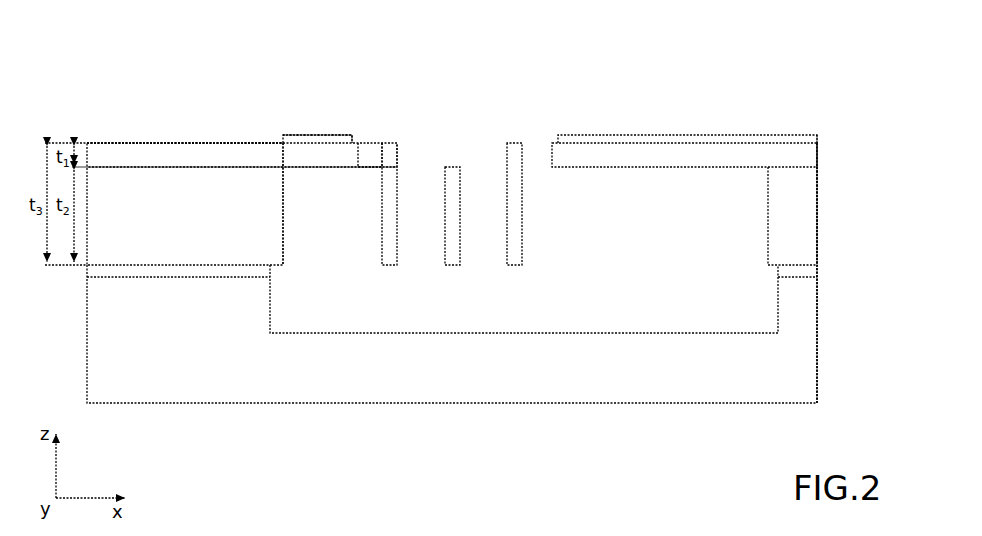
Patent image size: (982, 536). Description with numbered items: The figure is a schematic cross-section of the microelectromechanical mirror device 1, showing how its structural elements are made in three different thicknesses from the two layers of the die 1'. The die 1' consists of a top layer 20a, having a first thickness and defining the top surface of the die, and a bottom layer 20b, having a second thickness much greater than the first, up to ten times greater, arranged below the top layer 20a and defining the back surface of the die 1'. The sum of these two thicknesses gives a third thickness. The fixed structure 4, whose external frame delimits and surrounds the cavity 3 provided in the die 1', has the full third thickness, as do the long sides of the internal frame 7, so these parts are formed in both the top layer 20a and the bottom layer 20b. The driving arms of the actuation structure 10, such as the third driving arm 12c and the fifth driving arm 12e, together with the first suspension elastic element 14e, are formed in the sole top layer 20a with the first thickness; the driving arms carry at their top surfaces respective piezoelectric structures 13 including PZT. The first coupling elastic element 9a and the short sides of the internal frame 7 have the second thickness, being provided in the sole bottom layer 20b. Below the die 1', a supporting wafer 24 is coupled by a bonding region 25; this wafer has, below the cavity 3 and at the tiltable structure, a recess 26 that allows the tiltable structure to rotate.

The microelectromechanical mirror device 1 is at (844, 216).
The die 1' is at (845, 285).
The cavity 3 is at (287, 194).
The fixed structure 4 is at (167, 103).
The internal frame 7 is at (397, 166).
The first coupling elastic element 9a is at (455, 168).
The actuation structure 10 is at (336, 118).
The third driving arm 12c is at (663, 158).
The fifth driving arm 12e is at (325, 157).
The piezoelectric structure 13 is at (317, 137).
The first suspension elastic element 14e is at (370, 150).
The top layer 20a is at (823, 155).
The bottom layer 20b is at (824, 232).
The supporting wafer 24 is at (110, 333).
The bonding region 25 is at (102, 272).
The recess 26 is at (298, 326).